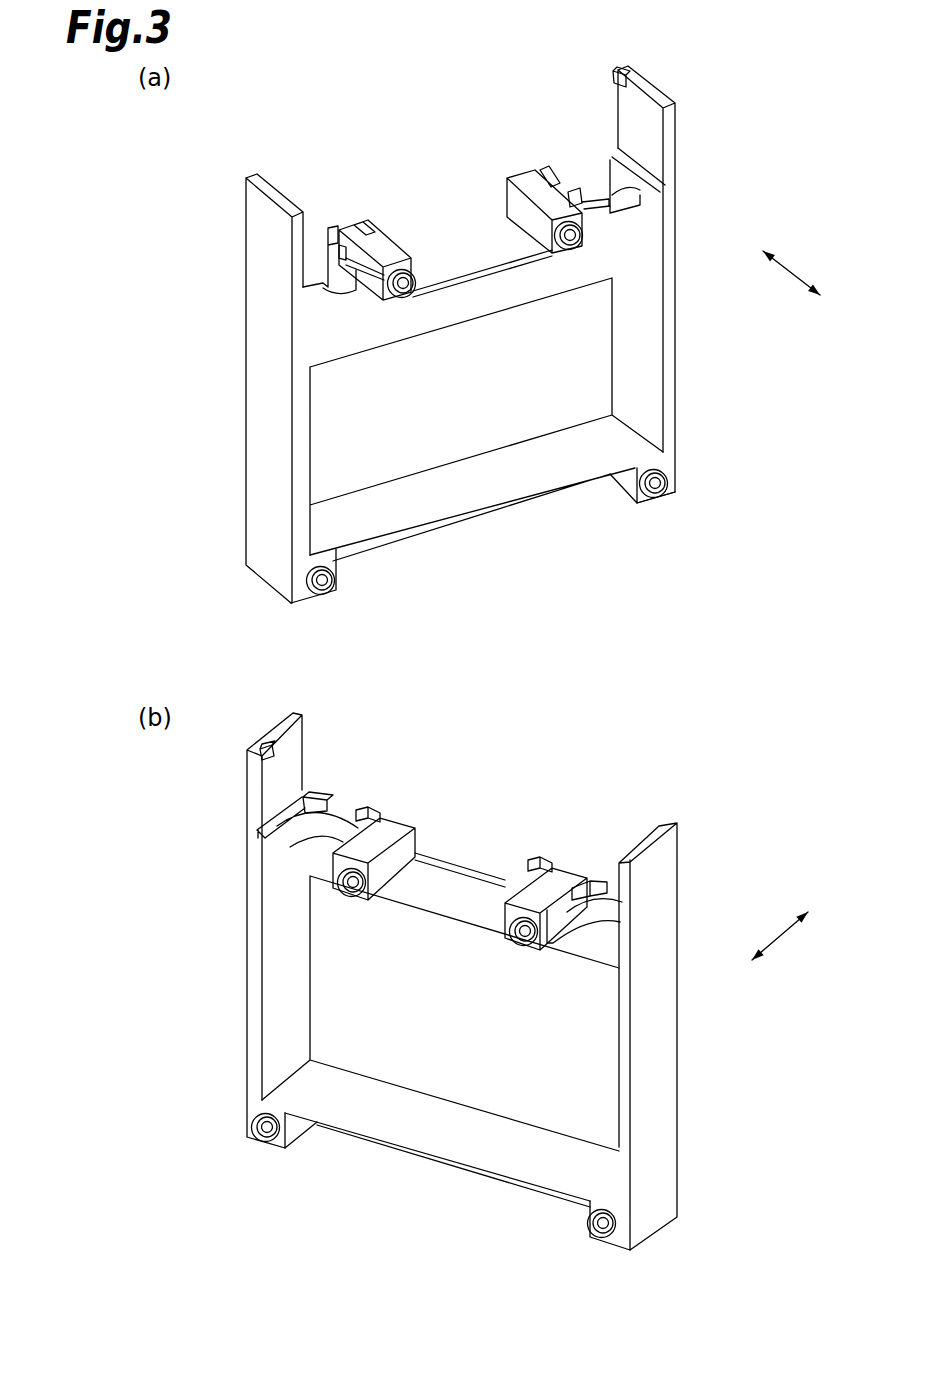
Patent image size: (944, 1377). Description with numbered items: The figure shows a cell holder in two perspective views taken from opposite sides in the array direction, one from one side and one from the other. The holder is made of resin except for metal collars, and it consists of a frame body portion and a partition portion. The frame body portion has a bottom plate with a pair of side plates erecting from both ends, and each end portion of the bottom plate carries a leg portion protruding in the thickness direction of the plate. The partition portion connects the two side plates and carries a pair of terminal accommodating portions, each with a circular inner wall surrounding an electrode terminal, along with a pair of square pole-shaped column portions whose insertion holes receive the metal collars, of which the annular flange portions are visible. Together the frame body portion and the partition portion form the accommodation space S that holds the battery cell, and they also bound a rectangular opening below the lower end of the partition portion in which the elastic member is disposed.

The accommodation space S is at (453, 1052).